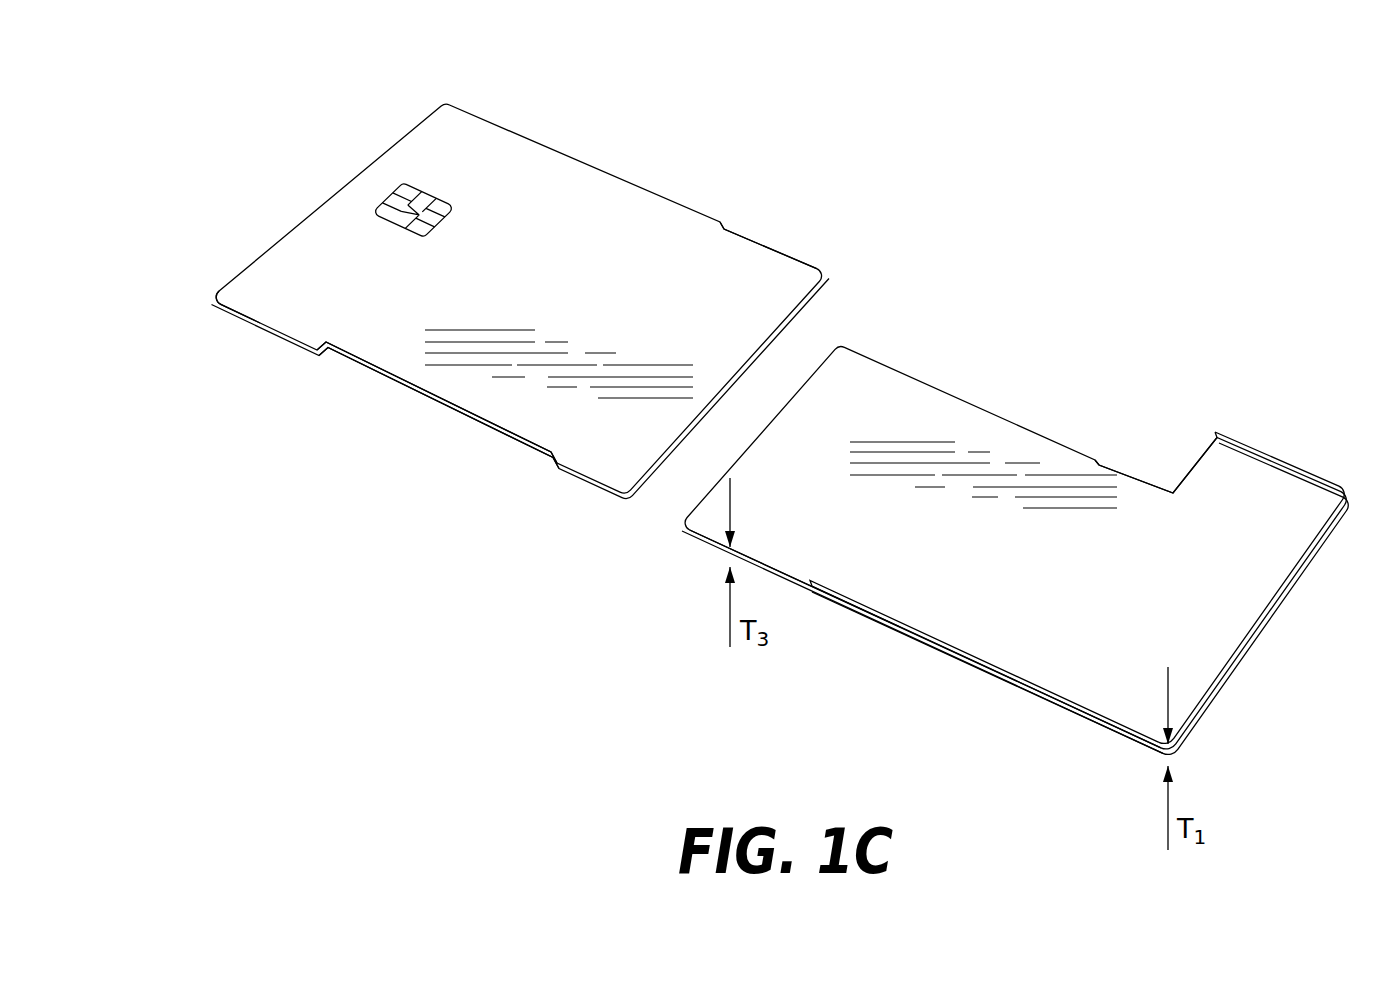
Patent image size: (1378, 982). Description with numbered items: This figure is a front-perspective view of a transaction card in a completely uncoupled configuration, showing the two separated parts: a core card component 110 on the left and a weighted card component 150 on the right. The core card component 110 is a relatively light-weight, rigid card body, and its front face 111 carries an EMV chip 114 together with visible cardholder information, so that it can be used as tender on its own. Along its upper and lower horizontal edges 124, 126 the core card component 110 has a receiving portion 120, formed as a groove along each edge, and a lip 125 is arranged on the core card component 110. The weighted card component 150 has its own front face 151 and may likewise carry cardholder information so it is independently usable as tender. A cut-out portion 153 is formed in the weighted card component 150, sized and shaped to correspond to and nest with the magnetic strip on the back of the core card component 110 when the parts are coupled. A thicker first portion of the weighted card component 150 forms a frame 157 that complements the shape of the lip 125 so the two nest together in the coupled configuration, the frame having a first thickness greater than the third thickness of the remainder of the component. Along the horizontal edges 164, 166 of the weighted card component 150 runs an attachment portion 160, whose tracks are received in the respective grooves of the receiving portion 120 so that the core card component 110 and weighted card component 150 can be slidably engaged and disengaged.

The core card component 110 is at (579, 228).
The front face 111 is at (569, 296).
The EMV chip 114 is at (434, 200).
The receiving portion 120 is at (581, 297).
The horizontal edge 124 is at (413, 388).
The horizontal edge 126 is at (753, 237).
The lip 125 is at (262, 312).
The weighted card component 150 is at (1004, 446).
The front face 151 is at (1125, 569).
The cut-out portion 153 is at (1145, 443).
The frame 157 is at (837, 606).
The attachment portion 160 is at (1077, 533).
The horizontal edge 164 is at (927, 636).
The horizontal edge 166 is at (1254, 449).